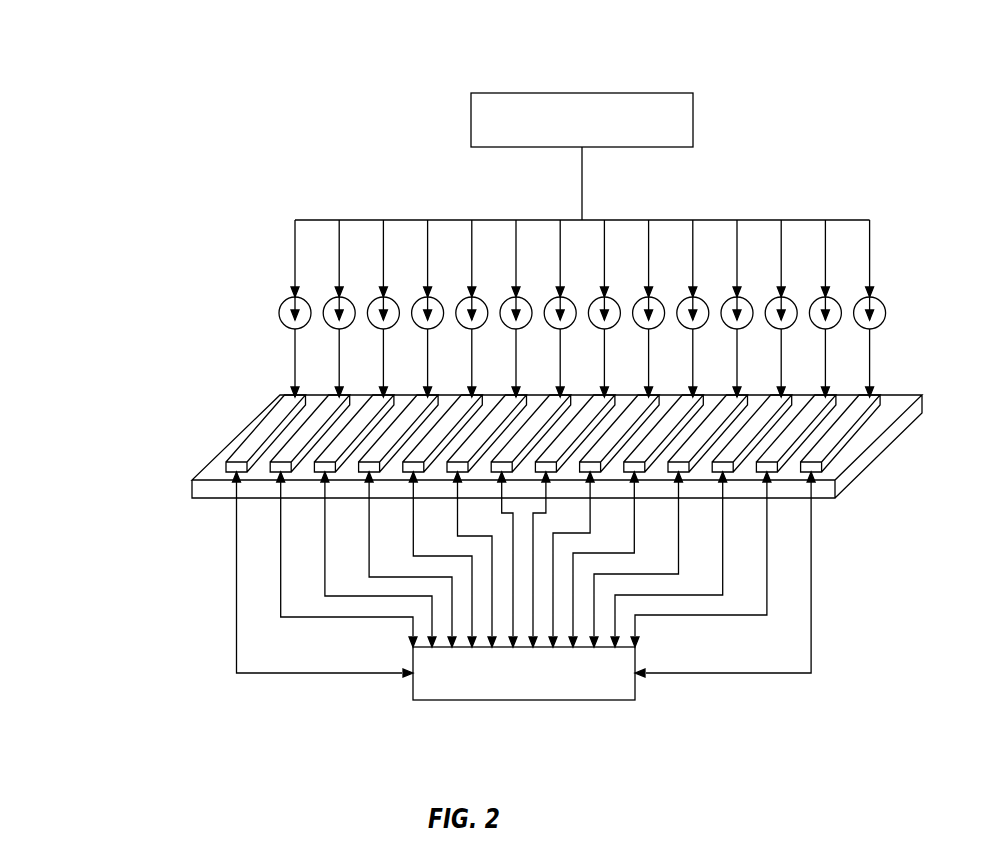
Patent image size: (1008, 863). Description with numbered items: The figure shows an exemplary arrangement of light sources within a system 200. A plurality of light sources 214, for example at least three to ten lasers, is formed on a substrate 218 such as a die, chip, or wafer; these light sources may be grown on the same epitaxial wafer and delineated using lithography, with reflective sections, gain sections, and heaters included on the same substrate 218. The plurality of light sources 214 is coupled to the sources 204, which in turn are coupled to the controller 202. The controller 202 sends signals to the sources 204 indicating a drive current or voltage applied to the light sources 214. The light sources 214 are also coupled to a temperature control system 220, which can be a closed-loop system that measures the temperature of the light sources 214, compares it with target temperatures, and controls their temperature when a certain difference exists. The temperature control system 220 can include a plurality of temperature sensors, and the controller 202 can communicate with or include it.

The system 200 is at (384, 88).
The controller 202 is at (582, 93).
The sources 204 is at (303, 326).
The plurality of light sources 214 is at (597, 483).
The substrate 218 is at (192, 493).
The temperature control system 220 is at (412, 660).